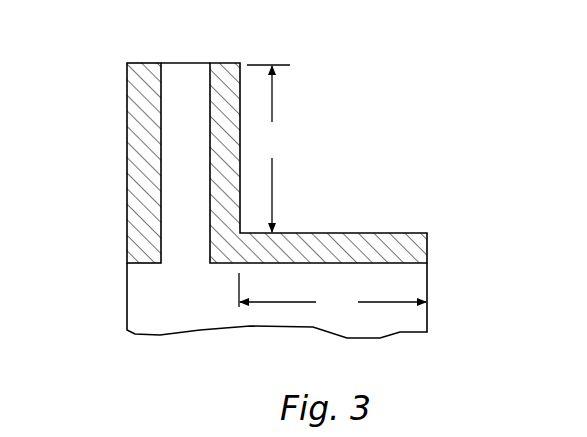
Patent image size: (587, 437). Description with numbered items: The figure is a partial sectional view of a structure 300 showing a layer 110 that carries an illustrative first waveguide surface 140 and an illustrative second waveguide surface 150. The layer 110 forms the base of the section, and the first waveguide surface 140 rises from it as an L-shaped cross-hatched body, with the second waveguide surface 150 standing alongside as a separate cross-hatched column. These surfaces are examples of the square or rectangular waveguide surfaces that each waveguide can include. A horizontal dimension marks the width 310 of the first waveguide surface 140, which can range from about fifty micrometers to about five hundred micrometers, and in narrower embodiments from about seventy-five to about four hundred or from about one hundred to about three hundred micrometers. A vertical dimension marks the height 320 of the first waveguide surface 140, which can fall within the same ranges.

The semiconductor structure 300 is at (281, 183).
The layer 110 is at (427, 292).
The second waveguide surface 150 is at (127, 205).
The first waveguide surface 140 is at (387, 233).
The height 320 is at (268, 148).
The width 310 is at (332, 292).